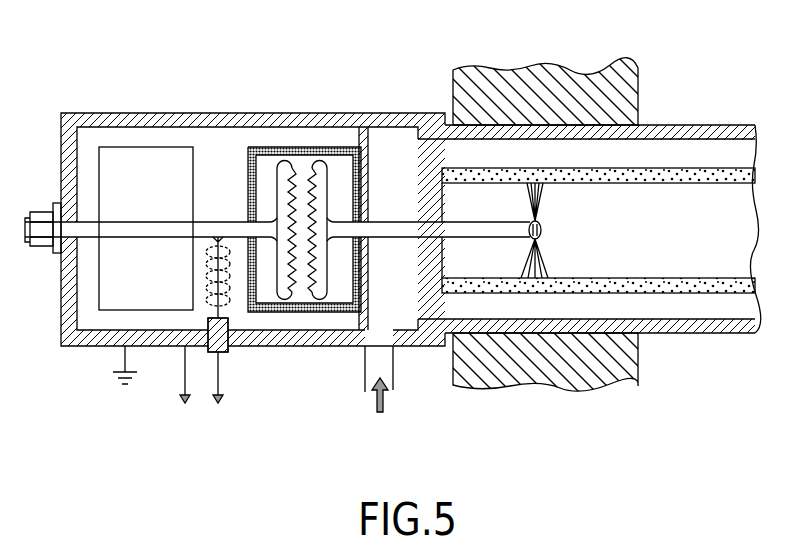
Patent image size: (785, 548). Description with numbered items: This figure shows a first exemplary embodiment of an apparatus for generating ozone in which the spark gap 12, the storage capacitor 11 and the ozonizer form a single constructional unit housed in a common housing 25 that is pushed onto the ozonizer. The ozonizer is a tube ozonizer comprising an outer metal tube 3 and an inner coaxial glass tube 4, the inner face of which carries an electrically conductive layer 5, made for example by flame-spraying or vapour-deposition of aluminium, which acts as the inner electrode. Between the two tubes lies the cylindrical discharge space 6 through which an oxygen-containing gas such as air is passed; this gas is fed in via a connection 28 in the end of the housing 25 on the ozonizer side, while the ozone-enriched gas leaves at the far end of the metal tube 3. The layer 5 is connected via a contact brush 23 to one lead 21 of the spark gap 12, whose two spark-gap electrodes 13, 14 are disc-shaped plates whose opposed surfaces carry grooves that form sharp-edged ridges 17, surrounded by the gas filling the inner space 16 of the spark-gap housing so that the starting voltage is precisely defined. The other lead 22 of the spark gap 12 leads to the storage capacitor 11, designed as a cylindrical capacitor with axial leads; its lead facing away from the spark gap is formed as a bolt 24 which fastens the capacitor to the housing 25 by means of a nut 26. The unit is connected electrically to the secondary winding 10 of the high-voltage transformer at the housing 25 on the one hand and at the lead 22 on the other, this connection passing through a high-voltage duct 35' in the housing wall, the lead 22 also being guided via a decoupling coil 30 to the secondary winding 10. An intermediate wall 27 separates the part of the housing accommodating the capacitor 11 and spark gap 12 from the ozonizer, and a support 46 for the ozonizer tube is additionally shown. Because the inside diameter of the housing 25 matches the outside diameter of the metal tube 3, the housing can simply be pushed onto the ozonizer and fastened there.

The outer metal tube 3 is at (570, 128).
The inner coaxial glass tube 4 is at (623, 285).
The electrically conductive layer 5 is at (730, 180).
The cylindrical discharge space 6 is at (553, 303).
The secondary winding 10 is at (200, 393).
The storage capacitor 11 is at (128, 288).
The spark gap 12 is at (300, 172).
The spark-gap electrode 13 is at (320, 178).
The spark-gap electrode 14 is at (285, 217).
The inner space 16 is at (267, 282).
The ridges 17 is at (317, 300).
The lead of the spark gap 21 is at (413, 232).
The lead of the spark gap 22 is at (222, 220).
The contact brush 23 is at (540, 260).
The bolt 24 is at (59, 268).
The housing 25 is at (125, 117).
The nut 26 is at (42, 214).
The intermediate wall 27 is at (370, 182).
The connection 28 is at (383, 363).
The decoupling coil 30 is at (205, 290).
The connector 35' is at (238, 377).
The support 46 is at (535, 82).